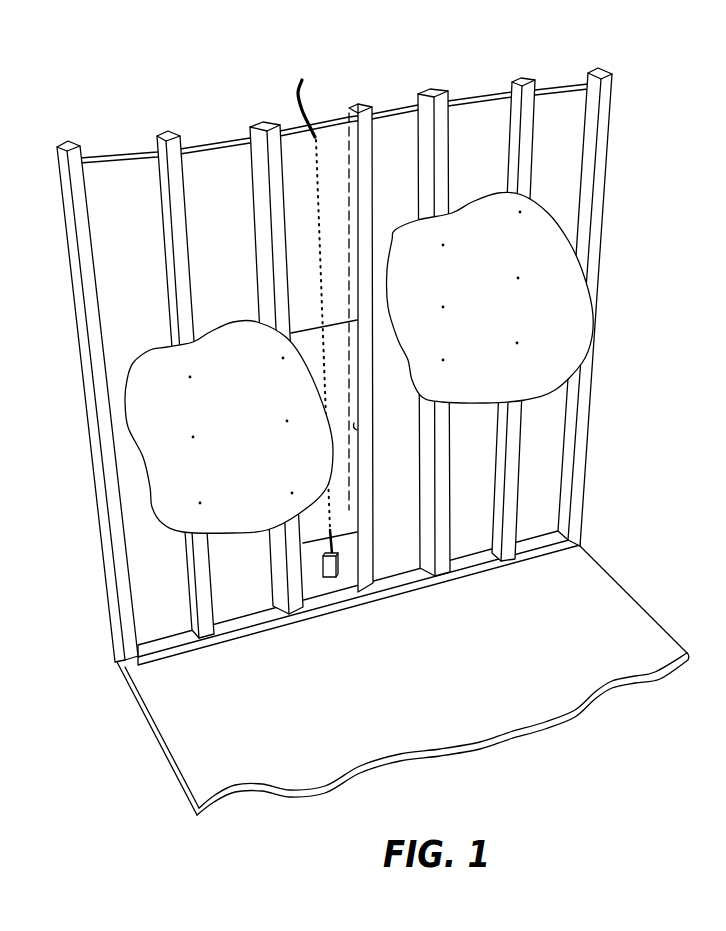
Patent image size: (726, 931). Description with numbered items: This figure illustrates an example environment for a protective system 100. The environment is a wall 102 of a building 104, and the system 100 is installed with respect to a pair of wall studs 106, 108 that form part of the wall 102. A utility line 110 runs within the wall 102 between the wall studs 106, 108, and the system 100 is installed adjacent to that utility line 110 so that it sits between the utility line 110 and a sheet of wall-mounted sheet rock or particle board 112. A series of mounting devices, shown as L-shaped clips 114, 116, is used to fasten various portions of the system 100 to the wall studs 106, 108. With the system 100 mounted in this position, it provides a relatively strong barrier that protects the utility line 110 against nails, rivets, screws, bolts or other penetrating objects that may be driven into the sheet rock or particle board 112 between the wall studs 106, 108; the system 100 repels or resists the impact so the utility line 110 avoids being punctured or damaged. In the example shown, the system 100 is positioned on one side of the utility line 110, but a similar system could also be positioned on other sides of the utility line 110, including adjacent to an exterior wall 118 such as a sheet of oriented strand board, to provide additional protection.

The system 100 is at (373, 420).
The wall 102 is at (371, 345).
The building 104 is at (422, 676).
The wall stud 106 is at (313, 135).
The wall stud 108 is at (363, 103).
The utility line 110 is at (318, 212).
The sheet rock or particle board 112 is at (252, 445).
The L-shaped clip 114 is at (322, 205).
The L-shaped clip 116 is at (357, 428).
The exterior wall 118 is at (327, 118).